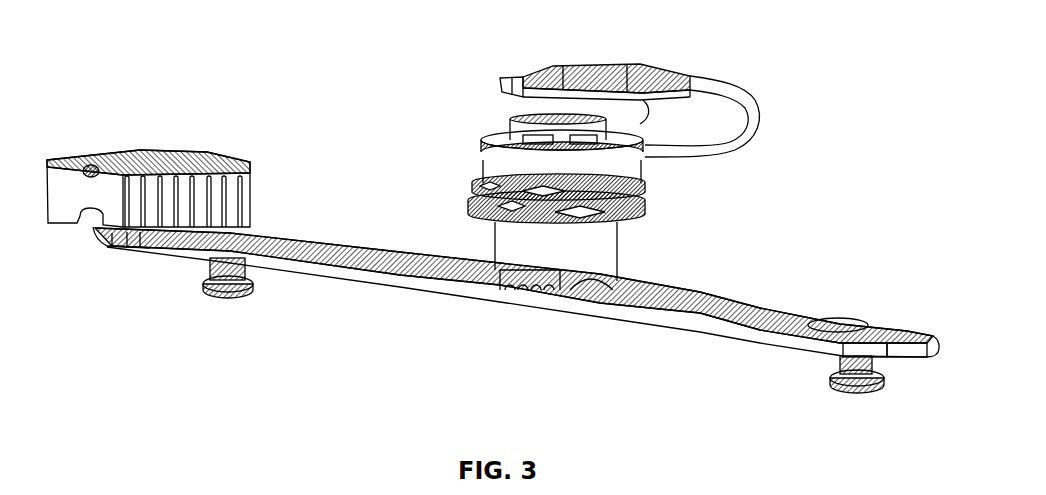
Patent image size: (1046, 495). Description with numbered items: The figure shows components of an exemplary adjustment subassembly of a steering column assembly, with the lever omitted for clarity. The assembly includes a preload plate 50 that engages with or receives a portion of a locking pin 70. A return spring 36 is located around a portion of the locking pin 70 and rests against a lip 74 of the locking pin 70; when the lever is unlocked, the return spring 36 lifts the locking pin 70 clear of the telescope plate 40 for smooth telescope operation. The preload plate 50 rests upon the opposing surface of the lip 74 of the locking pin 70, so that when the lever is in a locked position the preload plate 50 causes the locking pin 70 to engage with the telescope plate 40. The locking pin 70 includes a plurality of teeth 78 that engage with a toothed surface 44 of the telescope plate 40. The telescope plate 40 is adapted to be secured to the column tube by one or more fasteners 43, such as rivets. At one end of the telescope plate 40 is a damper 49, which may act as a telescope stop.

The return spring 36 is at (470, 187).
The telescope plate 40 is at (913, 328).
The fasteners 43 is at (207, 283).
The toothed surface 44 is at (360, 267).
The damper 49 is at (240, 187).
The preload plate 50 is at (683, 79).
The locking pin 70 is at (620, 253).
The lip 74 is at (630, 175).
The teeth 78 is at (527, 293).